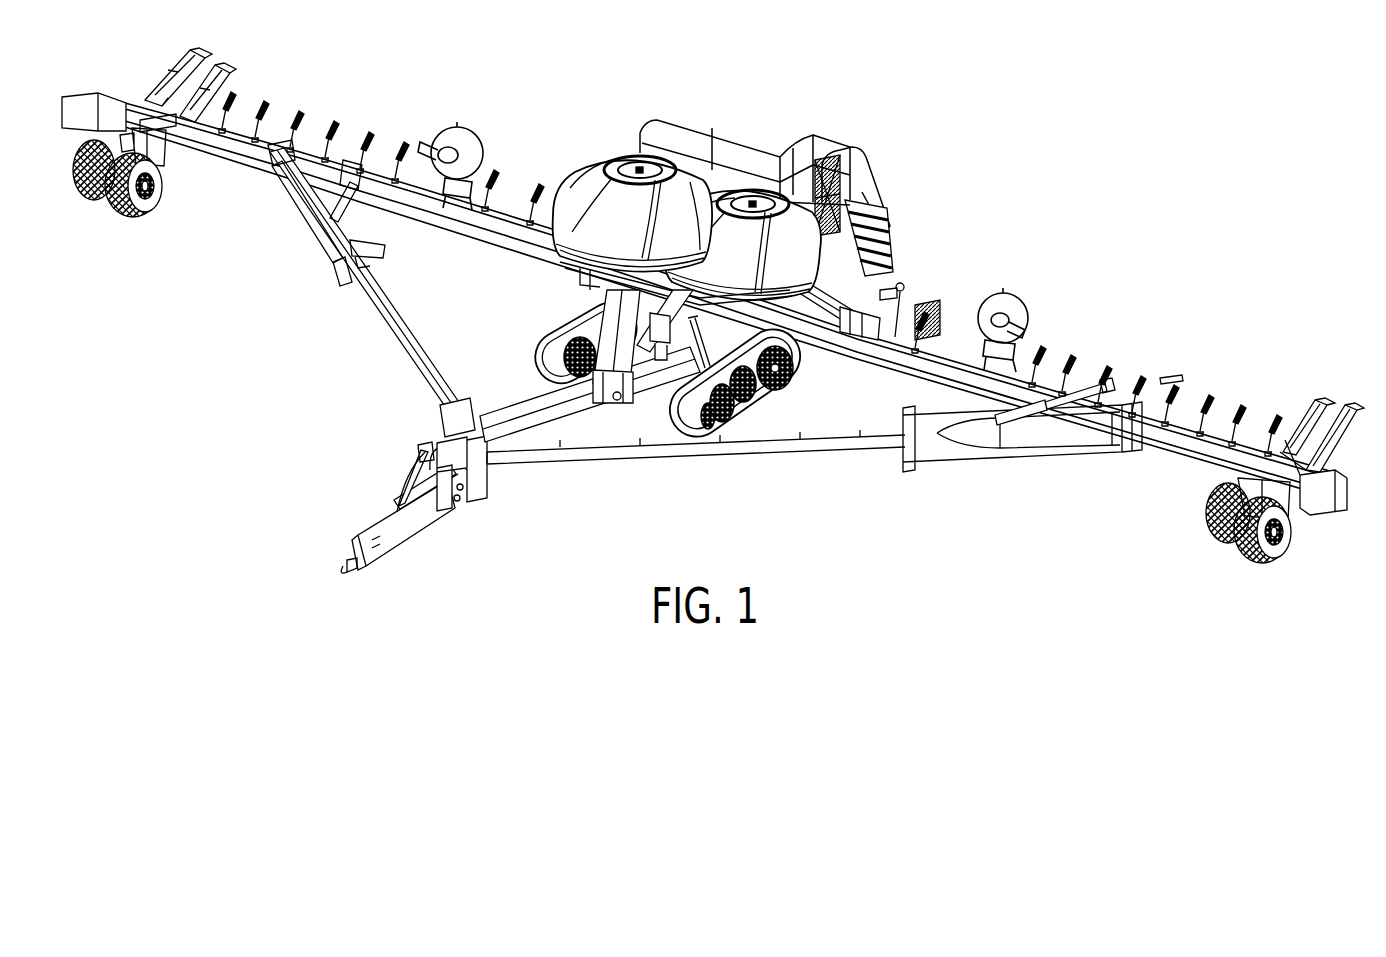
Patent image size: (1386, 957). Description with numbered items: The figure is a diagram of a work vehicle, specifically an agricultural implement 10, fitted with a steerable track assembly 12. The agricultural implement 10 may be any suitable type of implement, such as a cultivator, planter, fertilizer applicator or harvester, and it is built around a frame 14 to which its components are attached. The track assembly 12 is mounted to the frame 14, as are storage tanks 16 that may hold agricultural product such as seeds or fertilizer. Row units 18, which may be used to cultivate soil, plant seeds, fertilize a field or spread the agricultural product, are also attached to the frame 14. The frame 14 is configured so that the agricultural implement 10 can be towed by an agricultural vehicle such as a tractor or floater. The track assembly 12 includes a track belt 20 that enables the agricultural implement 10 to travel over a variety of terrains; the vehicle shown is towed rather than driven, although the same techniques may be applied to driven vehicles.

The agricultural implement 10 is at (868, 80).
The steerable track assembly 12 is at (774, 411).
The frame 14 is at (609, 405).
The storage tanks 16 is at (612, 197).
The row units 18 is at (1213, 392).
The track belt 20 is at (677, 412).